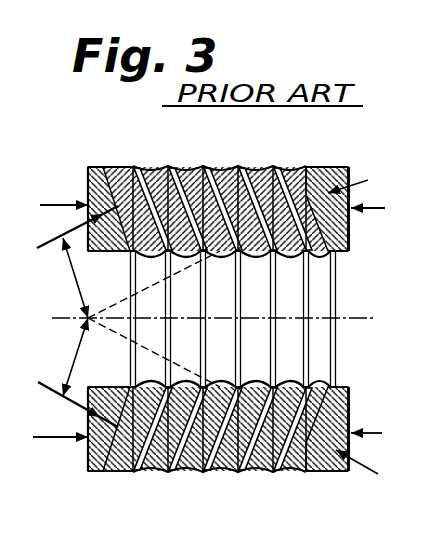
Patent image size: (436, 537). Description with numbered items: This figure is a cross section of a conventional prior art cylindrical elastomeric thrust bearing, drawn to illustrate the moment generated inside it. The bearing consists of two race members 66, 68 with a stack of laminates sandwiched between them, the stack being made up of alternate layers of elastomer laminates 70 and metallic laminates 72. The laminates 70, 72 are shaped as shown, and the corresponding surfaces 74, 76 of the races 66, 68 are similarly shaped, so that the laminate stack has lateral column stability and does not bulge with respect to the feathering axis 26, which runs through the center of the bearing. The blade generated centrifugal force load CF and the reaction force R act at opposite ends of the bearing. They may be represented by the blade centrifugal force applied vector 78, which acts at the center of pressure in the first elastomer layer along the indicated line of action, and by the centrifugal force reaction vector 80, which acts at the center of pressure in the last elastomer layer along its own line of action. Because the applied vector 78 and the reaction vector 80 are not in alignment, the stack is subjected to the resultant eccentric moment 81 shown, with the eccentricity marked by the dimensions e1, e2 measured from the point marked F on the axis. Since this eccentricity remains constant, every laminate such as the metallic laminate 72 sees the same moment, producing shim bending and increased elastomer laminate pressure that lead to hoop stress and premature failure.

The race member 66 is at (90, 166).
The race member 68 is at (330, 172).
The elastomer laminate 70 is at (262, 166).
The metallic laminate 72 is at (219, 166).
The surface of race 74 is at (129, 166).
The surface of race 76 is at (347, 169).
The blade centrifugal force applied vector 78 is at (365, 183).
The centrifugal force reaction vector 80 is at (66, 237).
The resultant eccentric moment 81 is at (250, 167).
The feathering axis 26 is at (364, 318).
The reaction force R is at (47, 324).
The blade generated centrifugal force load CF is at (382, 323).
The eccentricity e1 is at (65, 278).
The eccentricity e2 is at (65, 357).
The axis line F is at (6, 311).